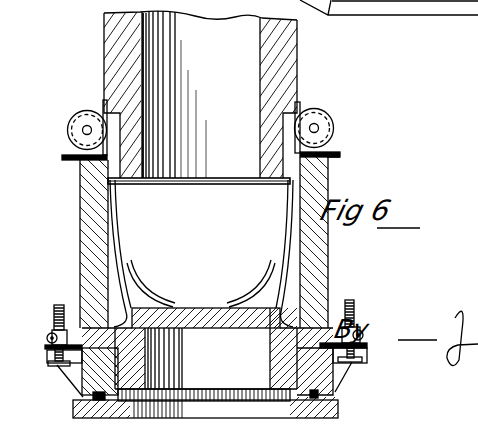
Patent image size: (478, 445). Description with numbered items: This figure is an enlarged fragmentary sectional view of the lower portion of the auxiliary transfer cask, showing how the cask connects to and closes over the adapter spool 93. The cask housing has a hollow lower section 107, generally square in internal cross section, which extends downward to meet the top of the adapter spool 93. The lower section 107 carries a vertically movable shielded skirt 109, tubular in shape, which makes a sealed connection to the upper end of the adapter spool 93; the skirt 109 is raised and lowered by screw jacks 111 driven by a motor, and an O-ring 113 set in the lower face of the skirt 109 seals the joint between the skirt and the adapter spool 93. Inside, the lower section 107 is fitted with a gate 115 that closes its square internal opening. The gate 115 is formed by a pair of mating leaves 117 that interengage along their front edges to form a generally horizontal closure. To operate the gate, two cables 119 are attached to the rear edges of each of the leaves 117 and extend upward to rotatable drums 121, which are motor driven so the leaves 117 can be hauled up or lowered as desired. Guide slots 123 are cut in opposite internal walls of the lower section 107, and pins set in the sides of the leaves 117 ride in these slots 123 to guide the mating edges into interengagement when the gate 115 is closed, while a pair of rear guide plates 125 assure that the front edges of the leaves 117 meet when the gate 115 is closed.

The adapter spool 93 is at (338, 406).
The lower section 107 is at (331, 173).
The shielded skirt 109 is at (90, 384).
The screw jacks 111 is at (54, 307).
The O-ring 113 is at (334, 391).
The gate 115 is at (214, 318).
The mating leaves 117 is at (226, 333).
The cables 119 is at (118, 213).
The rotatable drums 121 is at (76, 120).
The guide slots 123 is at (143, 278).
The rear guide plates 125 is at (112, 276).